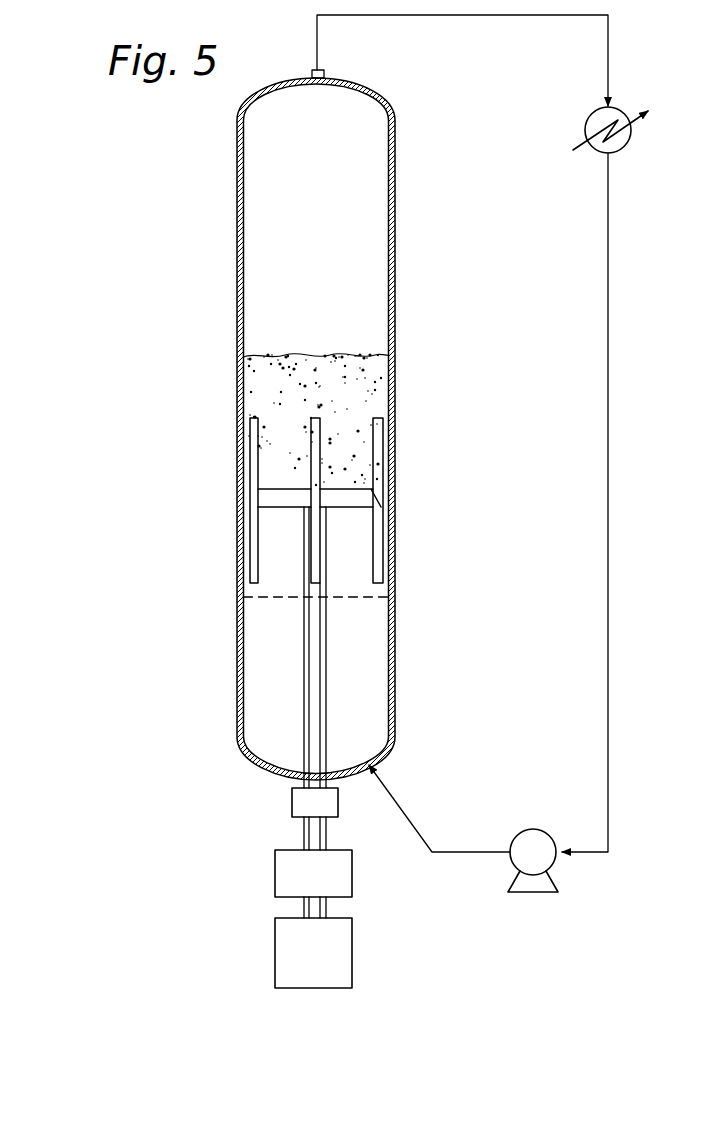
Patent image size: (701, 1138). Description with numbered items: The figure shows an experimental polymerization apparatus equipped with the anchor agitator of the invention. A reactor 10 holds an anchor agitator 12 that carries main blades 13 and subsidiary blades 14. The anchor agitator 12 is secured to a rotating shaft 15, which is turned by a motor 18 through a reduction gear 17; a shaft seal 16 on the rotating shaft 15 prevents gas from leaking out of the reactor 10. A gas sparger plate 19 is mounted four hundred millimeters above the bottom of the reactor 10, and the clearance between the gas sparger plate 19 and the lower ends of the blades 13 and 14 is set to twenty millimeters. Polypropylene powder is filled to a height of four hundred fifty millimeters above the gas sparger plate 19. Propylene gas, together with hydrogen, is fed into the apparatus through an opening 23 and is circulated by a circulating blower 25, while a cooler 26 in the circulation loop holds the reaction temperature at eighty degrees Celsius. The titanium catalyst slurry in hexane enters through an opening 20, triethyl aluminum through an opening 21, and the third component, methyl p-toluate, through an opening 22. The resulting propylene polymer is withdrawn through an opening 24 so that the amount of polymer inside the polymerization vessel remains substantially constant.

The reactor 10 is at (237, 158).
The anchor agitator 12 is at (328, 530).
The main blades 13 is at (255, 432).
The subsidiary blades 14 is at (311, 437).
The rotating shaft 15 is at (318, 708).
The shaft seal 16 is at (338, 805).
The reduction gear 17 is at (345, 880).
The motor 18 is at (345, 973).
The gas sparger plate 19 is at (355, 600).
The opening 20 is at (236, 533).
The opening 21 is at (236, 579).
The opening 22 is at (132, 582).
The opening 23 is at (266, 766).
The opening 24 is at (395, 587).
The circulating blower 25 is at (545, 885).
The cooler 26 is at (621, 150).